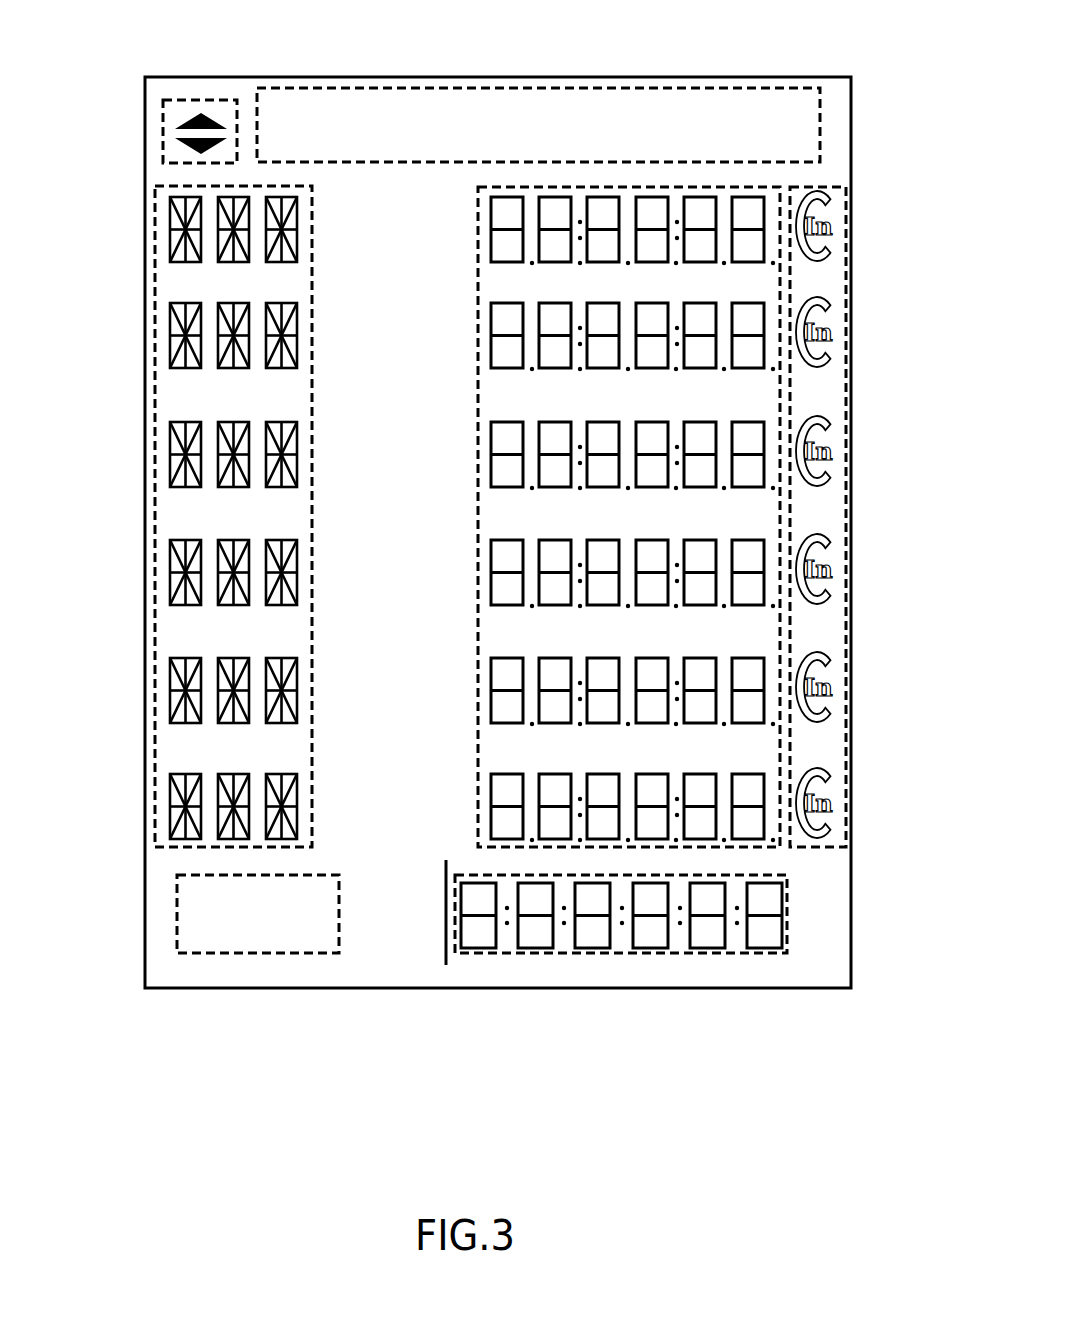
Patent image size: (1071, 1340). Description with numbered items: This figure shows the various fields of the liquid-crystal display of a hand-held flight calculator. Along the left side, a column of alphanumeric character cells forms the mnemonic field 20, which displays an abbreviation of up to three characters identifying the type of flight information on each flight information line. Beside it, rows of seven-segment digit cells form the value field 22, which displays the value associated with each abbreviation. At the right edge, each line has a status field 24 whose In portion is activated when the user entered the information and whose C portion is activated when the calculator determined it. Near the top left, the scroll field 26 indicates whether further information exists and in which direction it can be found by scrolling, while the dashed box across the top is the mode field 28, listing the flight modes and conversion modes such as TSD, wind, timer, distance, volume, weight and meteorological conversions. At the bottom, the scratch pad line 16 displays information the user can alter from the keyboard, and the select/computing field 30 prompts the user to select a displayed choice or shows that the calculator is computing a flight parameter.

The scratch pad line 16 is at (444, 932).
The mnemonic field 20 is at (165, 183).
The value field 22 is at (470, 287).
The status field 24 is at (838, 185).
The scroll field 26 is at (206, 99).
The mode field 28 is at (731, 78).
The select/computing field 30 is at (250, 955).